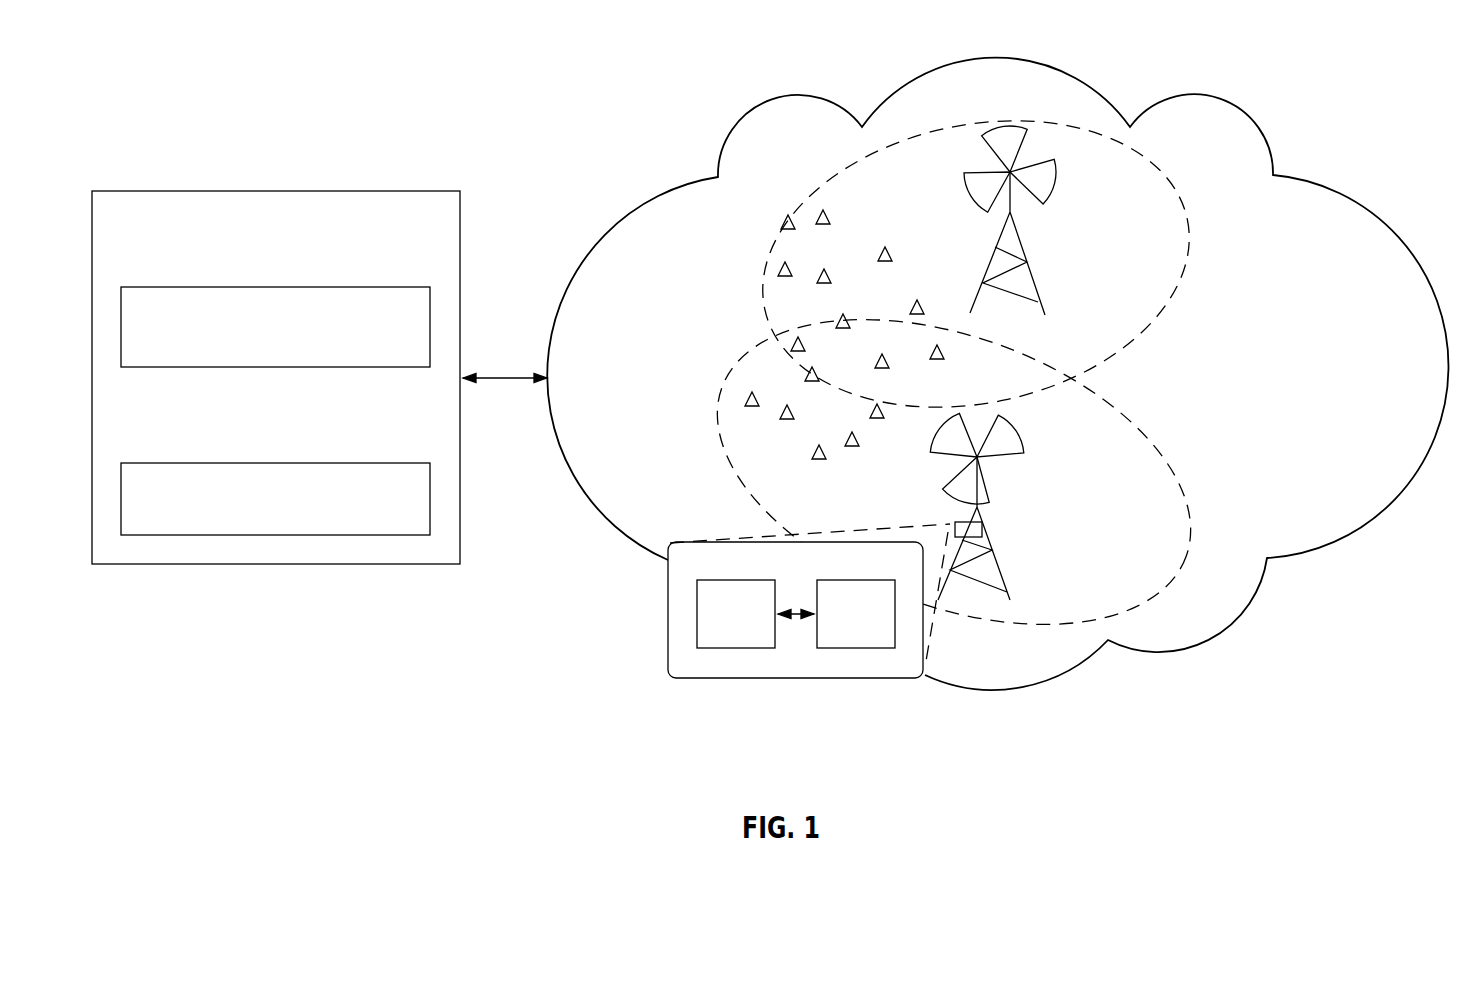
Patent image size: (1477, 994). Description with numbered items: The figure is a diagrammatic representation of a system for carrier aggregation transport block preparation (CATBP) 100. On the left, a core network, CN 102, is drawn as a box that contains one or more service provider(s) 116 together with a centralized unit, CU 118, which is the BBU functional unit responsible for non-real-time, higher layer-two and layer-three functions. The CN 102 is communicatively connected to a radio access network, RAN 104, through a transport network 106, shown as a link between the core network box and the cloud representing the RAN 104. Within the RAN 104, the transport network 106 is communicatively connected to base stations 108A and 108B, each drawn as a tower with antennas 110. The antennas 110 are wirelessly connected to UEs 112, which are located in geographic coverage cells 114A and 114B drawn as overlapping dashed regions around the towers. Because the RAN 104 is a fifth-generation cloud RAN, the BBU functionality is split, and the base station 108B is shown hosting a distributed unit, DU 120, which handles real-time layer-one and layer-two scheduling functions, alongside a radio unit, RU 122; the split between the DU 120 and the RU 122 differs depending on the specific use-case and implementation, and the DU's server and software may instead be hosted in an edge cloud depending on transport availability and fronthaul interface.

The system for carrier aggregation transport block preparation (CATBP) 100 is at (1337, 78).
The CN 102 is at (151, 191).
The RAN 104 is at (797, 95).
The transport network 106 is at (503, 383).
The base station 108A is at (1040, 265).
The base station 108B is at (1003, 560).
The antennas 110 is at (1058, 180).
The UEs 112 is at (752, 388).
The geographic coverage cell 114A is at (1198, 250).
The geographic coverage cell 114B is at (743, 482).
The service provider(s) 116 is at (182, 463).
The centralized unit (CU) 118 is at (182, 287).
The distributed unit (DU) 120 is at (734, 580).
The RU 122 is at (851, 580).